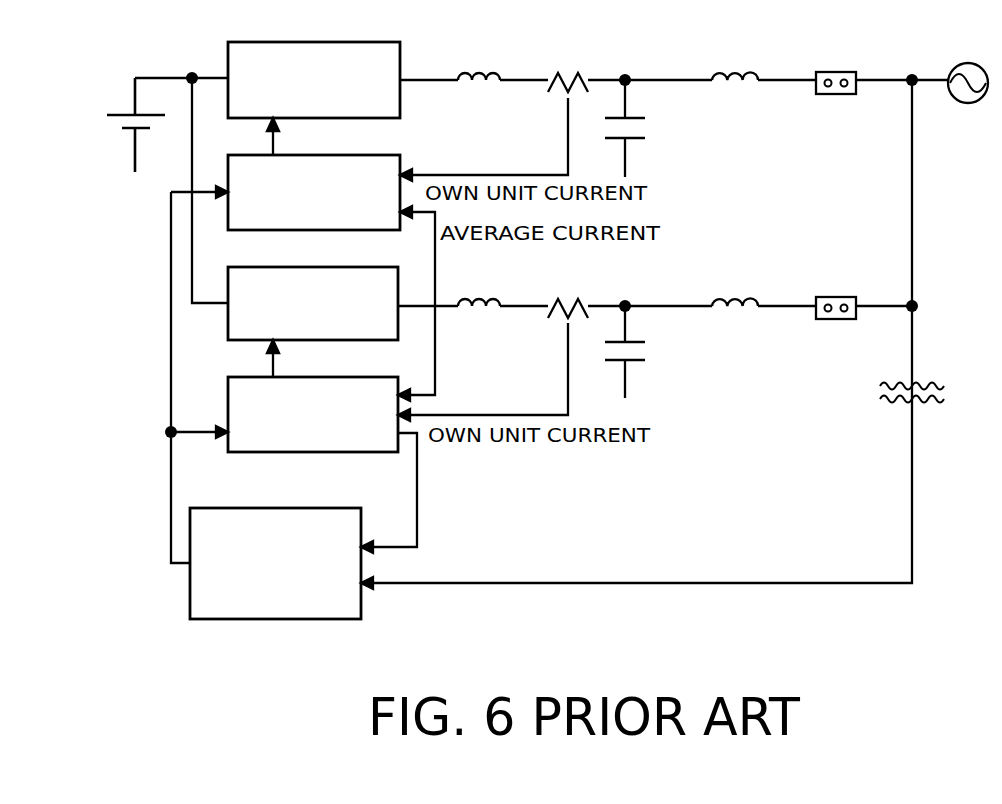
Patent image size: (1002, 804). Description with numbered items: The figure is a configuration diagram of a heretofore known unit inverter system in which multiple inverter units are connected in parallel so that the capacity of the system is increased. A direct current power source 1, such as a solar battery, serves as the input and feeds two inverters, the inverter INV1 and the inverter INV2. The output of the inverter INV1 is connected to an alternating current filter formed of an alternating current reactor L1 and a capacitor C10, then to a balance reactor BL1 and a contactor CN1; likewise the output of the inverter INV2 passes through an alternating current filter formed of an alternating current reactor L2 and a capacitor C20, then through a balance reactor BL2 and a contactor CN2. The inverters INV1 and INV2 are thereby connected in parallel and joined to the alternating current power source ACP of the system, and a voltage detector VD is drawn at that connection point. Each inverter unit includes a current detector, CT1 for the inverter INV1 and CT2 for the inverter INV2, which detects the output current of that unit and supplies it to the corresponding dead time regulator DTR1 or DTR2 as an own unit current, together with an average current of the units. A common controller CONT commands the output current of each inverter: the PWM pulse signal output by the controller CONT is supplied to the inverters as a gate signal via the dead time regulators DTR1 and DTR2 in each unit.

The direct current power source 1 is at (126, 125).
The inverter INV1 is at (314, 80).
The inverter INV2 is at (313, 303).
The dead time regulator DTR1 is at (314, 206).
The dead time regulator DTR2 is at (313, 429).
The common controller CONT is at (275, 563).
The alternating current reactor L1 is at (479, 61).
The alternating current reactor L2 is at (479, 287).
The current detector CT1 is at (494, 112).
The current detector CT2 is at (493, 344).
The capacitor C10 is at (649, 128).
The capacitor C20 is at (649, 352).
The balance reactor BL1 is at (735, 61).
The balance reactor BL2 is at (735, 287).
The contactor CN1 is at (835, 68).
The contactor CN2 is at (835, 294).
The alternating current power source ACP is at (968, 68).
The voltage detector VD is at (934, 395).